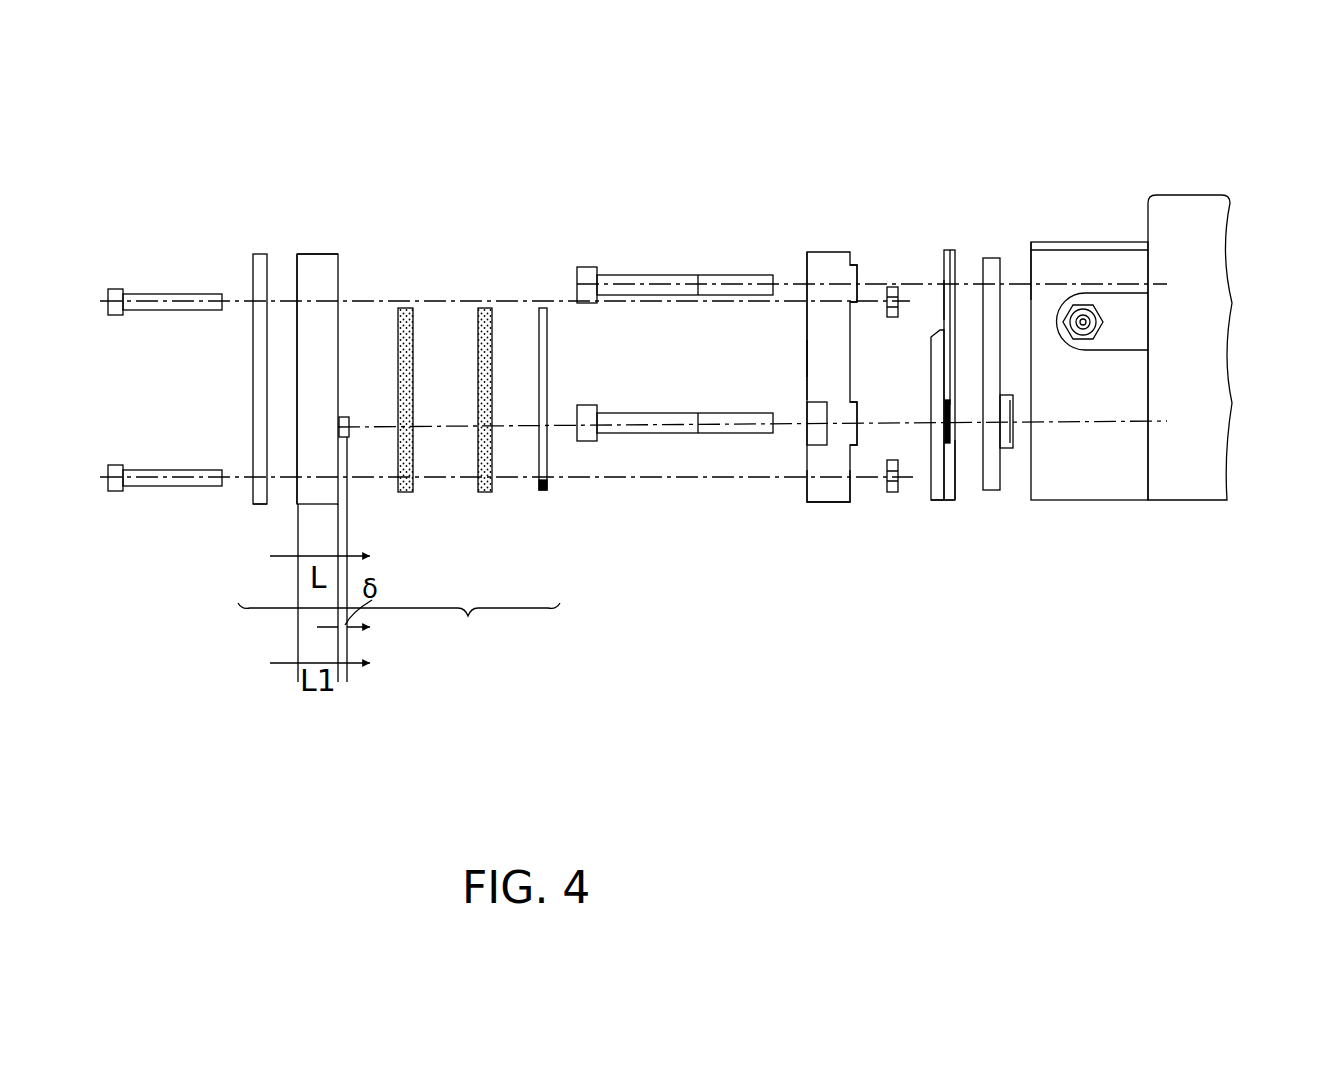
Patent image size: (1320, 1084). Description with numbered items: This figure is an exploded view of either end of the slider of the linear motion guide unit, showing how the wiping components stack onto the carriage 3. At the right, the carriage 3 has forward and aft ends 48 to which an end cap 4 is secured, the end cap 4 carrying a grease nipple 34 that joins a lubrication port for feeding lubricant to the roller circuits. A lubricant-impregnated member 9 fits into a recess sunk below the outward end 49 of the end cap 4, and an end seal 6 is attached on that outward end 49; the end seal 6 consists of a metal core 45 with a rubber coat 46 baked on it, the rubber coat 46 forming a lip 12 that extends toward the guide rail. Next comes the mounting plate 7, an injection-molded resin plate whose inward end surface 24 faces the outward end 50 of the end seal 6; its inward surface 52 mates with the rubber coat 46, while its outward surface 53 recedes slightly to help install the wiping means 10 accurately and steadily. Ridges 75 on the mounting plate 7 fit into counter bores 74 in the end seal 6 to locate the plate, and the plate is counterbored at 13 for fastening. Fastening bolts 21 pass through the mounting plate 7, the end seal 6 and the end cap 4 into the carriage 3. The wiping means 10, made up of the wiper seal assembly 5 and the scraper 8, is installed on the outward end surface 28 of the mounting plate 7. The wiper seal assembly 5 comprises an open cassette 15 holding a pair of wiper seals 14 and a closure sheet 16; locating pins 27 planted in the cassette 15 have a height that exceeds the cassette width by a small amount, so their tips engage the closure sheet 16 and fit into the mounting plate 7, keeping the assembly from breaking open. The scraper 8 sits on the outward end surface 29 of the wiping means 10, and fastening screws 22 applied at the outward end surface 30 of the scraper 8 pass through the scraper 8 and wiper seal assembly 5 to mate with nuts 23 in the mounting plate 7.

The carriage 3 is at (1183, 210).
The end cap 4 is at (1080, 268).
The wiper seal assembly 5 is at (322, 338).
The end seal 6 is at (948, 250).
The mounting plate 7 is at (807, 497).
The scraper 8 is at (258, 505).
The lubricant-impregnated member 9 is at (990, 258).
The wiping means 10 is at (399, 628).
The lip 12 is at (935, 449).
The counterbore 13 is at (803, 443).
The wiper seals 14 is at (485, 493).
The cassette 15 is at (320, 262).
The closure sheet 16 is at (545, 493).
The fastening bolts 21 is at (650, 283).
The fastening screws 22 is at (168, 297).
The nuts 23 is at (891, 287).
The inward end surface 24 is at (851, 360).
The locating pins 27 is at (349, 424).
The outward end surface 28 is at (806, 330).
The outward end surface 29 is at (297, 275).
The outward end surface 30 is at (253, 275).
The grease nipple 34 is at (1092, 343).
The metal core 45 is at (952, 467).
The rubber coat 46 is at (938, 502).
The forward and aft ends 48 is at (1135, 250).
The outward end 49 is at (1025, 262).
The outward end 50 is at (942, 300).
The inward surface 52 is at (858, 500).
The outward surface 53 is at (806, 363).
The counter bores 74 is at (947, 415).
The ridges 75 is at (858, 268).